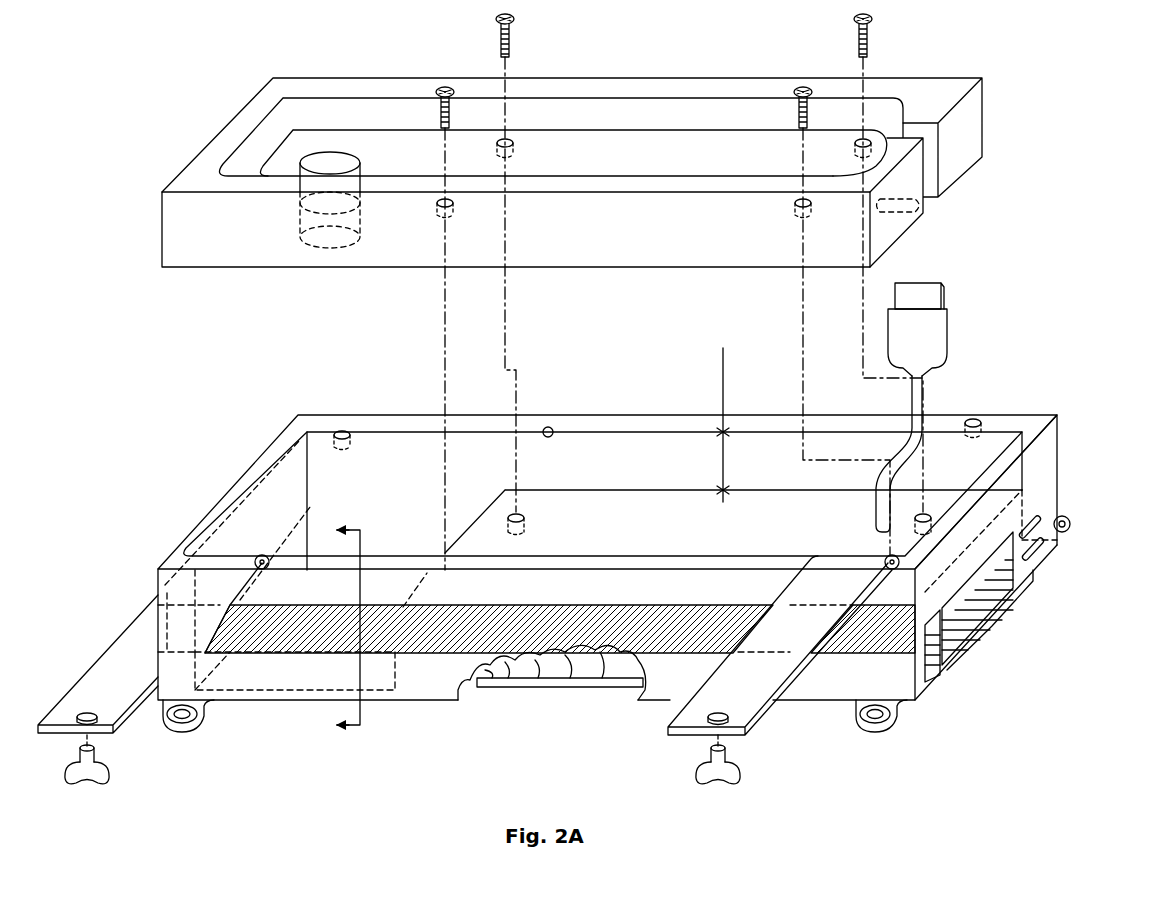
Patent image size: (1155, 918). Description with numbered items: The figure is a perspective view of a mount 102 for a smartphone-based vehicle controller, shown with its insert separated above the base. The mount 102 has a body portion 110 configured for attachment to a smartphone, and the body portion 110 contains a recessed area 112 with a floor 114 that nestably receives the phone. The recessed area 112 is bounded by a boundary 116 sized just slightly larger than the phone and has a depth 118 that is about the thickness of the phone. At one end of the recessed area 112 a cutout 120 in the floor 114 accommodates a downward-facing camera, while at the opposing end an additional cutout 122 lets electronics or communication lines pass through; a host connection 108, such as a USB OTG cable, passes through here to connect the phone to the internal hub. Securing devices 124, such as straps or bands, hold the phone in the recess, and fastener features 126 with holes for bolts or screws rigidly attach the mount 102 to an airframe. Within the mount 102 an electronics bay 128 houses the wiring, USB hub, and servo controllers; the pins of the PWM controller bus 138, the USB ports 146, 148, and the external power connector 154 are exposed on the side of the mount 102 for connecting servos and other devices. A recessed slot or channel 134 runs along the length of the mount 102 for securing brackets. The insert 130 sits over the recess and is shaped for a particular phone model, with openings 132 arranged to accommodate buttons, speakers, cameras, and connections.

The mount 102 is at (210, 432).
The host connection 108 is at (912, 394).
The body portion 110 is at (598, 426).
The recessed area 112 is at (381, 458).
The floor 114 is at (638, 522).
The boundary 116 is at (548, 426).
The depth 118 is at (727, 414).
The cutout 120 is at (398, 534).
The additional cutout 122 is at (828, 527).
The securing devices 124 is at (108, 678).
The fastener features 126 is at (182, 733).
The electronics bay 128 is at (530, 696).
The insert 130 is at (165, 173).
The openings 132 is at (340, 160).
The recessed slot or channel 134 is at (408, 656).
The PWM controller bus 138 is at (992, 629).
The USB port 146 is at (1042, 516).
The USB port 148 is at (1047, 541).
The external power connector 154 is at (940, 690).